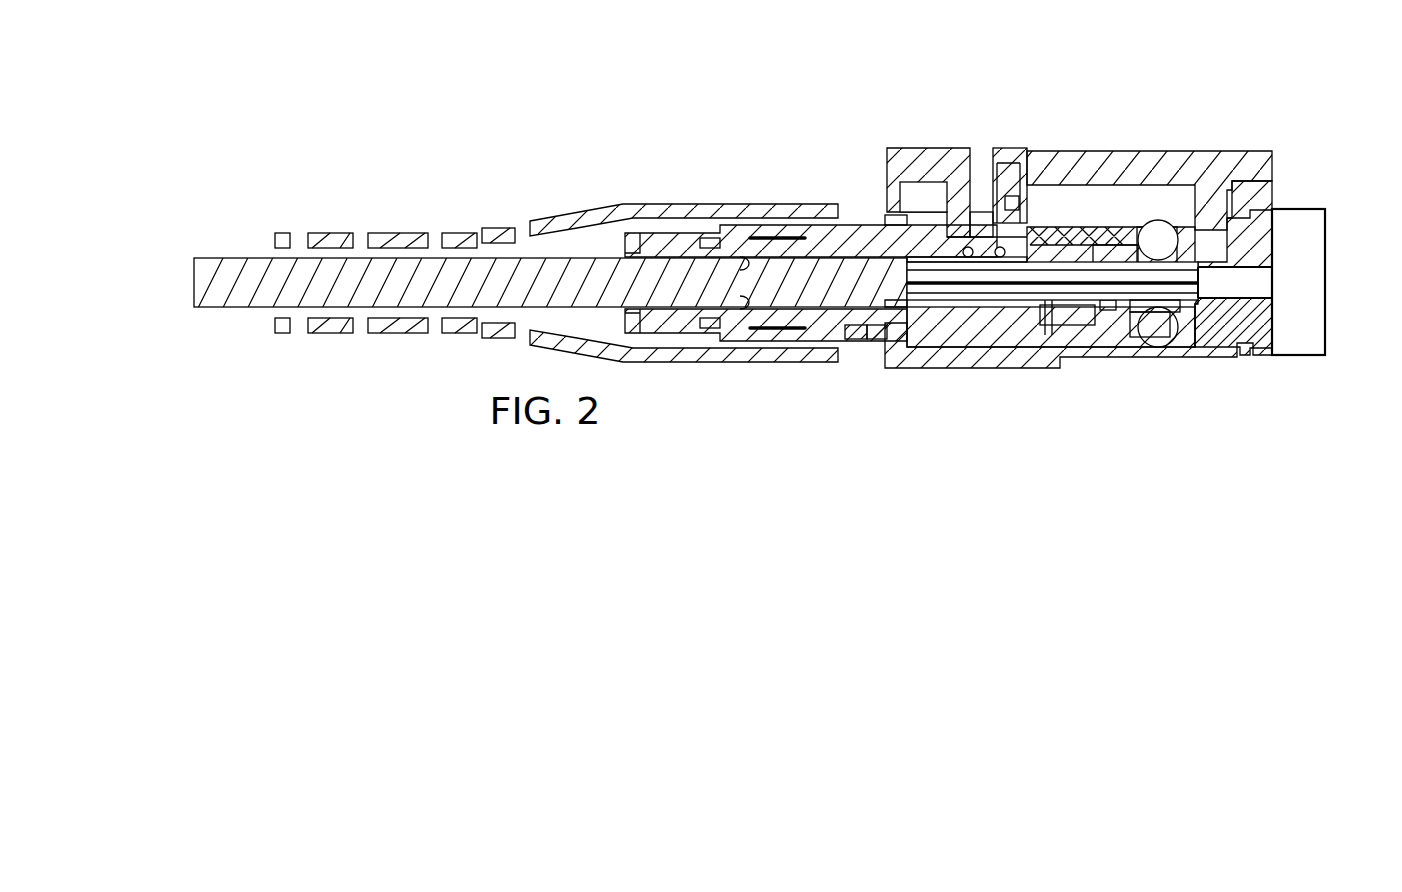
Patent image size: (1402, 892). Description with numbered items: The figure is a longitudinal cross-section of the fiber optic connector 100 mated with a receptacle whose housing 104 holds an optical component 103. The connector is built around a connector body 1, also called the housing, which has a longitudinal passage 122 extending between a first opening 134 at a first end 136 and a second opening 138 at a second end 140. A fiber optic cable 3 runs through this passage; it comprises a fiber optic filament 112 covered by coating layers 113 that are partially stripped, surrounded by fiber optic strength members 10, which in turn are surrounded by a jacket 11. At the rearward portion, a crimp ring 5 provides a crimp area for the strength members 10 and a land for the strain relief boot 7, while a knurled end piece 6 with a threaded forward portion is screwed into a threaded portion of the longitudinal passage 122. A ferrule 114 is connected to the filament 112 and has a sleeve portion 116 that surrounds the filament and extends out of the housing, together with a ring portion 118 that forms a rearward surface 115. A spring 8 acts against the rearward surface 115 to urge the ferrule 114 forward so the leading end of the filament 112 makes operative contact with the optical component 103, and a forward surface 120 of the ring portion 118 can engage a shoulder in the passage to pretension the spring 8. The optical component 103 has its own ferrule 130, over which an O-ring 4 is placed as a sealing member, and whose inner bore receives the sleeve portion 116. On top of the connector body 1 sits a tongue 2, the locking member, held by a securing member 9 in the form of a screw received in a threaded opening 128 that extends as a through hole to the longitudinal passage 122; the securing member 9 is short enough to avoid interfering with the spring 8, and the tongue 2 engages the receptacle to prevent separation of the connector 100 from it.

The connector body 1 is at (888, 210).
The tongue 2 is at (918, 150).
The fiber optic cable 3 is at (680, 290).
The O-ring 4 is at (1156, 232).
The crimp ring 5 is at (706, 240).
The knurled end piece 6 is at (796, 240).
The strain relief boot 7 is at (603, 213).
The spring 8 is at (982, 312).
The securing member 9 is at (982, 168).
The fiber optic strength members 10 is at (736, 245).
The jacket 11 is at (668, 262).
The fiber optic connector 100 is at (808, 110).
The optical component 103 is at (1287, 323).
The housing 104 is at (1145, 165).
The fiber optic filament 112 is at (993, 285).
The coating layers 113 is at (780, 285).
The ferrule 114 is at (1152, 288).
The rearward surface 115 is at (1052, 298).
The sleeve portion 116 is at (1152, 305).
The ring portion 118 is at (1090, 333).
The forward surface 120 is at (1062, 240).
The longitudinal passage 122 is at (885, 300).
The threaded opening 128 is at (963, 165).
The ferrule 130 is at (1183, 312).
The first opening 134 is at (1131, 240).
The first end 136 is at (1102, 240).
The second opening 138 is at (855, 330).
The second end 140 is at (862, 338).